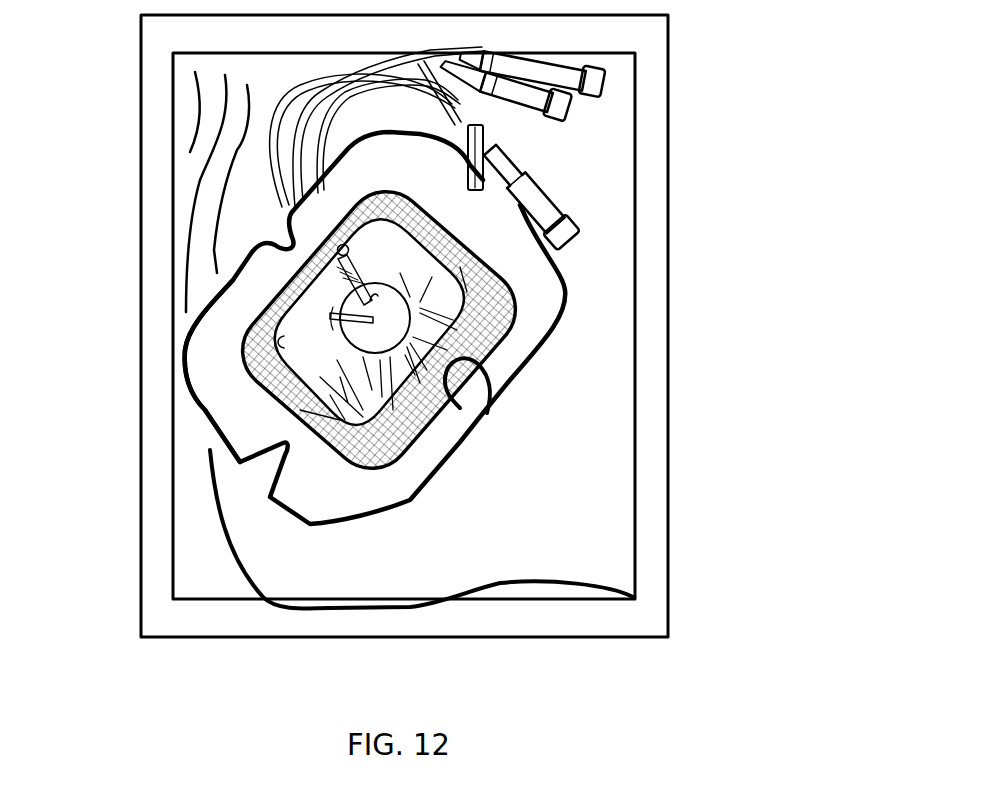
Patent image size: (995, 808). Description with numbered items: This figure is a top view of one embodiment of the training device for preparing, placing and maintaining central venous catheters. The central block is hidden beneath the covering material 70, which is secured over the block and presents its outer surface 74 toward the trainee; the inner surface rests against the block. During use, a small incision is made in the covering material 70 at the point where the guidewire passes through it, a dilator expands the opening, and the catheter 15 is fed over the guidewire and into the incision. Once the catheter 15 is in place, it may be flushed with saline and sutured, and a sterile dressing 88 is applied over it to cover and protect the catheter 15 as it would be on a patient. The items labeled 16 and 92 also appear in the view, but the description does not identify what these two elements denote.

The tubing connectors 16 is at (547, 213).
The catheter 15 is at (295, 258).
The port 92 is at (357, 338).
The sterile dressing 88 is at (230, 393).
The covering material 70 is at (525, 393).
The outer surface 74 is at (513, 517).